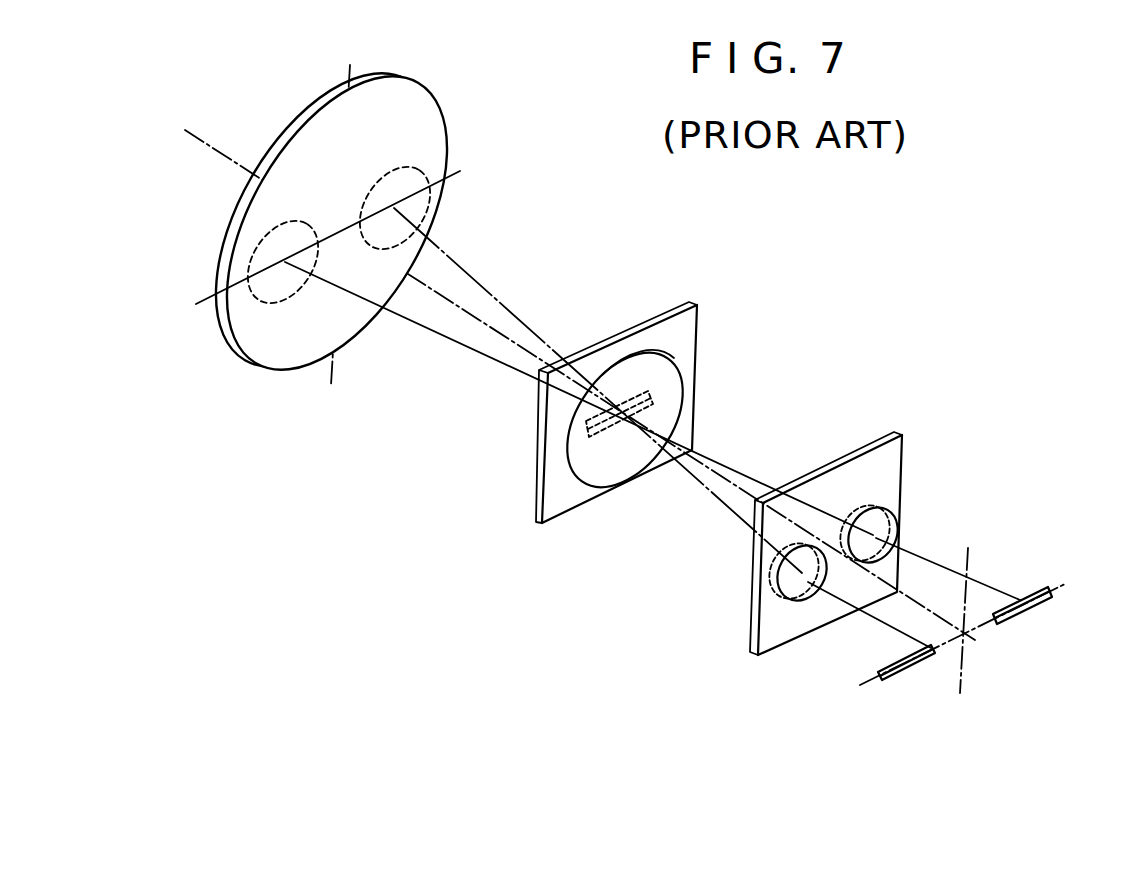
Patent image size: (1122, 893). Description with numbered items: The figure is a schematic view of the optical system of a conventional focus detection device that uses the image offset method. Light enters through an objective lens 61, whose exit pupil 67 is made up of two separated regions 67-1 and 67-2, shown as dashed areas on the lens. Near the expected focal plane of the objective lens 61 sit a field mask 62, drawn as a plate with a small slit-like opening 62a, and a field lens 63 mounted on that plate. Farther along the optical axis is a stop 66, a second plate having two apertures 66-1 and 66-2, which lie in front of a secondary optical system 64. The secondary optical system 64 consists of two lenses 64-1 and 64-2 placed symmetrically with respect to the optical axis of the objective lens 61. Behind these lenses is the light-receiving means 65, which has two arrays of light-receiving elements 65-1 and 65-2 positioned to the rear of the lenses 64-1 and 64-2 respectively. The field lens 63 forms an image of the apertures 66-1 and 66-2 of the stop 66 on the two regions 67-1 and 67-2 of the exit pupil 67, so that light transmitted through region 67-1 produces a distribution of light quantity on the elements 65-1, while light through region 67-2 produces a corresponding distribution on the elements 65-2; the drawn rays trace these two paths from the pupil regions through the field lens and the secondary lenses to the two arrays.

The objective lens 61 is at (432, 112).
The field mask 62 is at (682, 307).
The slit 62a is at (595, 432).
The field lens 63 is at (674, 378).
The secondary optical system 64 is at (856, 568).
The lens 64-1 is at (825, 576).
The lens 64-2 is at (867, 593).
The light-receiving means 65 is at (961, 692).
The array of light-receiving elements 65-1 is at (905, 677).
The array of light-receiving elements 65-2 is at (1032, 612).
The stop 66 is at (898, 433).
The aperture 66-1 is at (780, 600).
The aperture 66-2 is at (851, 562).
The exit pupil 67 is at (313, 310).
The region 67-1 is at (387, 250).
The region 67-2 is at (268, 303).